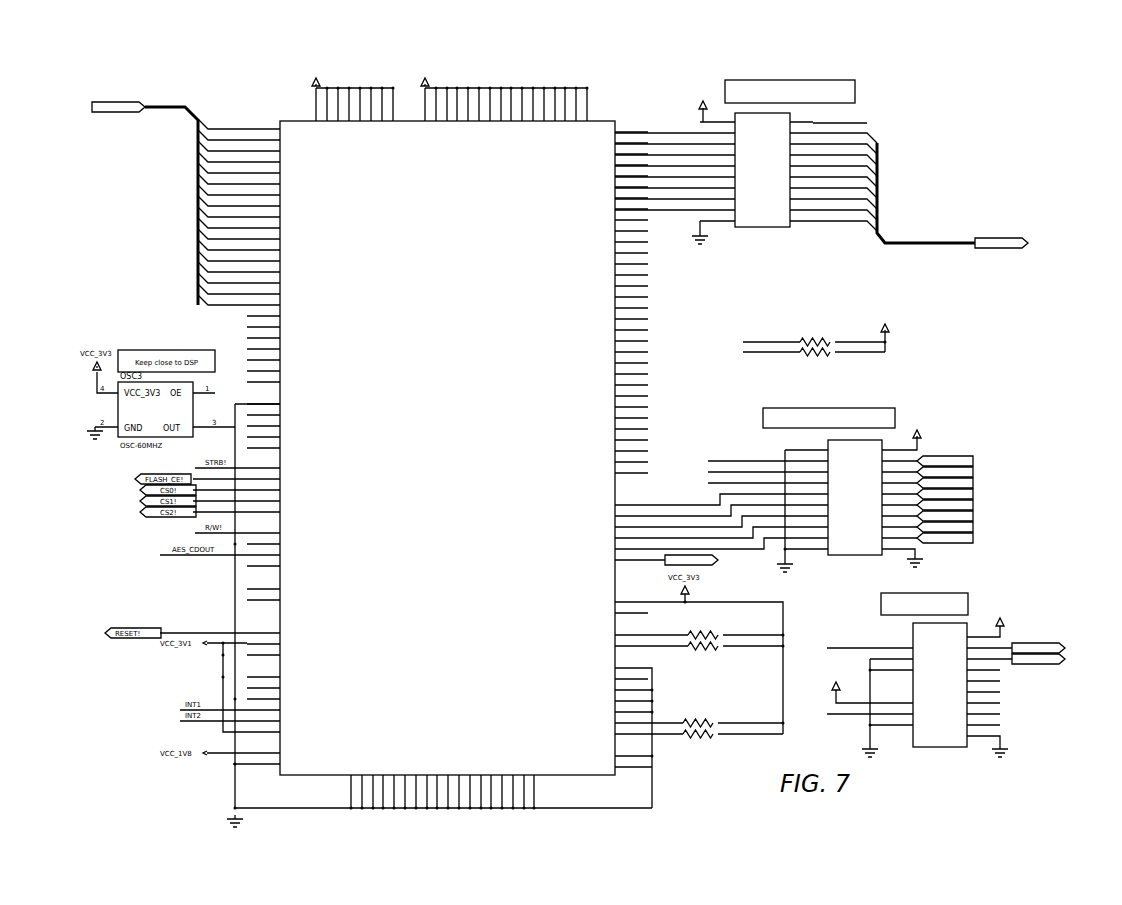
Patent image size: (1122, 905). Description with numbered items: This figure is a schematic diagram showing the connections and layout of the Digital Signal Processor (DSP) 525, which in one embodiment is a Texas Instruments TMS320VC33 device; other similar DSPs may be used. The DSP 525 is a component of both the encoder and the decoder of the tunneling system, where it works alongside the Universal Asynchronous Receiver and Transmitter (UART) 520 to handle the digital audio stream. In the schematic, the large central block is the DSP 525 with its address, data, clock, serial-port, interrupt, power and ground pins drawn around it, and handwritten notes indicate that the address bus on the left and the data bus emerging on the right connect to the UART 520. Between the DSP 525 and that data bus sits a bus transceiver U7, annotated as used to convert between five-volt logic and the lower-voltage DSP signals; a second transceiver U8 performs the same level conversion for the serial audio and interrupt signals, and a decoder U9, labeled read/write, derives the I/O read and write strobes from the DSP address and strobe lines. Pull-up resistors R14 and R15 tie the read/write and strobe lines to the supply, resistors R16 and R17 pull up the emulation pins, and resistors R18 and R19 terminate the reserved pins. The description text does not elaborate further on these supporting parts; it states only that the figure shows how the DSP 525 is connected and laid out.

The Digital Signal Processor (DSP) 525 is at (443, 441).
The Universal Asynchronous Receiver and Transmitter (UART) 520 is at (1020, 288).
The 74LCX245WM level converter U7 is at (735, 162).
The 74LCX245WM level converter U8 is at (810, 490).
The 74ACT138 decoder U9 is at (942, 677).
The resistor 10K R14 is at (820, 329).
The resistor 10K R15 is at (814, 359).
The resistor 10K R16 is at (716, 627).
The resistor 10K R17 is at (716, 656).
The resistor 10K R18 is at (716, 710).
The resistor 10K R19 is at (715, 748).